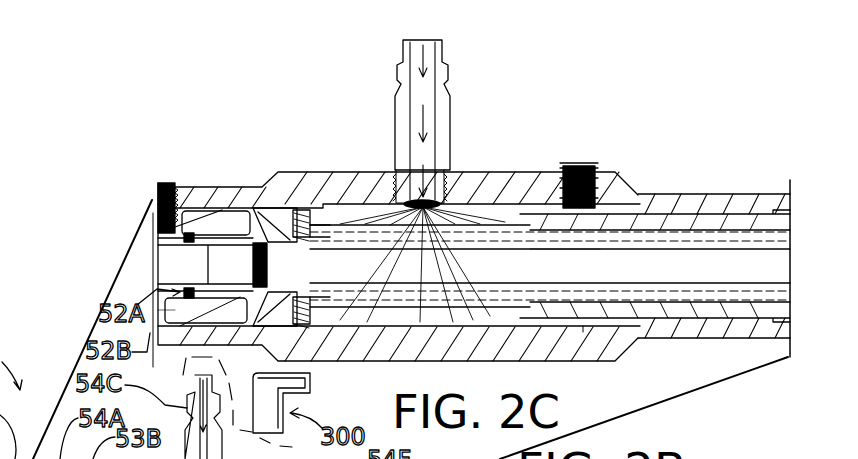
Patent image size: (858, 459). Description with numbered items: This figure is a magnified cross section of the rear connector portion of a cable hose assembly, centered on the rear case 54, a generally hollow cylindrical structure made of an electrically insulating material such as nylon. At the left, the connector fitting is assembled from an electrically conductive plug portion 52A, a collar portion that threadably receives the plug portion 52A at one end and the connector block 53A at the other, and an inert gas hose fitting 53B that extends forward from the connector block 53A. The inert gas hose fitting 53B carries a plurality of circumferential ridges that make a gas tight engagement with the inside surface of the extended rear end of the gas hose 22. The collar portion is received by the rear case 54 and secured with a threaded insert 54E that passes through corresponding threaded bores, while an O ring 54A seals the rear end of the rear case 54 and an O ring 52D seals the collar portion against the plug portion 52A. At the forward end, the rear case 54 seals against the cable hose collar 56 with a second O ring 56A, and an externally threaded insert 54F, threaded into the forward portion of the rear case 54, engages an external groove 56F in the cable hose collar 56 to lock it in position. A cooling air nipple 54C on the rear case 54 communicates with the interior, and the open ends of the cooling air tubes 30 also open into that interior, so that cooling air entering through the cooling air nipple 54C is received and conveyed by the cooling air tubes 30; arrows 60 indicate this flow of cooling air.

The gas hose 22 is at (640, 277).
The cooling air tubes 30 is at (656, 294).
The plug portion 52A is at (206, 307).
The O ring 52D is at (194, 230).
The connector block 53A is at (289, 214).
The inert gas hose fitting 53B is at (440, 244).
The rear case 54 is at (300, 172).
The O ring 54A is at (226, 205).
The cooling air nipple 54C is at (437, 120).
The threaded insert 54E is at (165, 184).
The externally threaded insert 54F is at (574, 165).
The cable hose collar 56 is at (676, 193).
The second O ring 56A is at (641, 199).
The external groove 56F is at (583, 330).
The arrows 60 is at (368, 210).